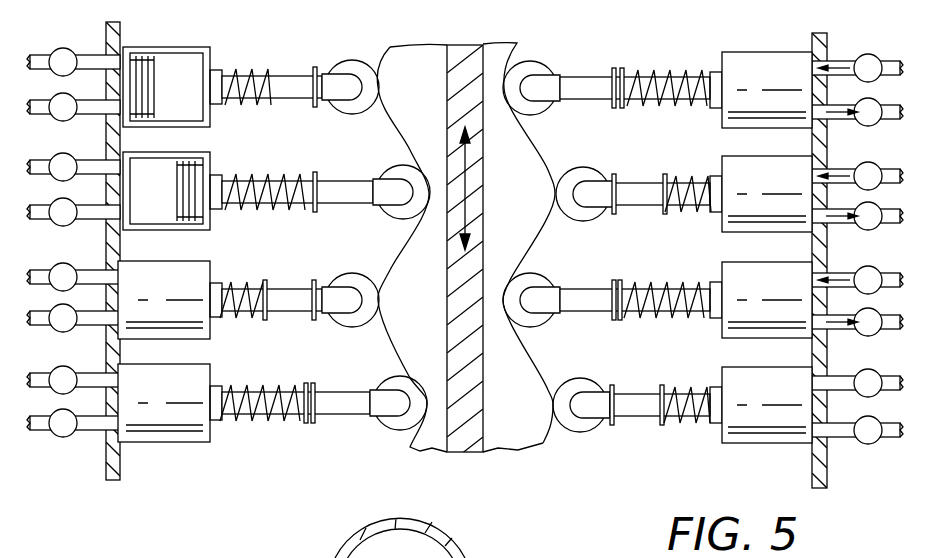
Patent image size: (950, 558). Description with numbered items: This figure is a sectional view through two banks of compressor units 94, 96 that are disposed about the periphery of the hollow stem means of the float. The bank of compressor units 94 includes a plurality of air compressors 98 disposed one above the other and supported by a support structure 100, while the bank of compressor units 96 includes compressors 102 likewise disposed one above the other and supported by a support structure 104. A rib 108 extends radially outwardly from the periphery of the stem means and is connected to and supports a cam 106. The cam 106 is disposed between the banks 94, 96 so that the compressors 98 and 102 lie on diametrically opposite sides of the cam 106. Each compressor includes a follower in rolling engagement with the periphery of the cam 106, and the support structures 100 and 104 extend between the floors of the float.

The bank of compressor units 94 is at (218, 443).
The bank of compressor units 96 is at (690, 442).
The air compressor 98 is at (200, 47).
The support structure 100 is at (118, 30).
The compressor 102 is at (758, 53).
The support structure 104 is at (818, 32).
The cam 106 is at (507, 362).
The rib 108 is at (467, 402).